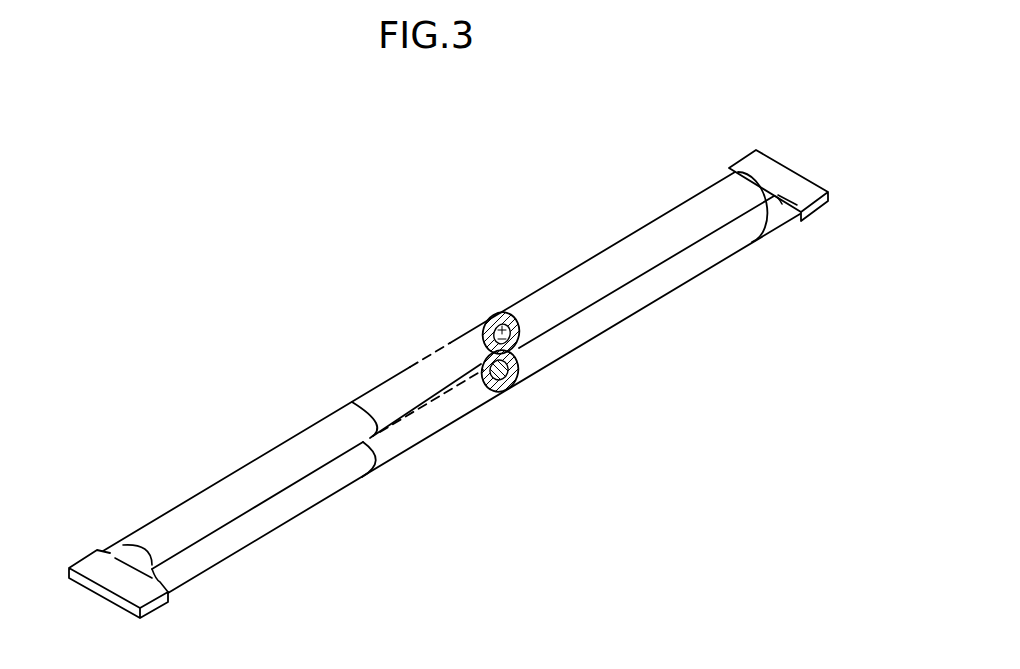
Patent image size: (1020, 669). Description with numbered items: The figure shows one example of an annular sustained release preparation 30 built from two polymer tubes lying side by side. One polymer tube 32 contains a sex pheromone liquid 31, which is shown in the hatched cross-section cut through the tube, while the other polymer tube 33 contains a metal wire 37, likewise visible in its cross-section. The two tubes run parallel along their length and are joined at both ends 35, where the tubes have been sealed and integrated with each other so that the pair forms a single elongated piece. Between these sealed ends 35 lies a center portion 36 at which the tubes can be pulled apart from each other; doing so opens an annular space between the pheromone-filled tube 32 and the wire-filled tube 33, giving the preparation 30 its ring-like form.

The sustained release preparation 30 is at (580, 388).
The sex pheromone liquid 31 is at (500, 323).
The polymer tube 32 is at (287, 468).
The polymer tube 33 is at (230, 547).
The ends 35 is at (767, 162).
The center portion 36 is at (632, 283).
The metal wire 37 is at (505, 390).